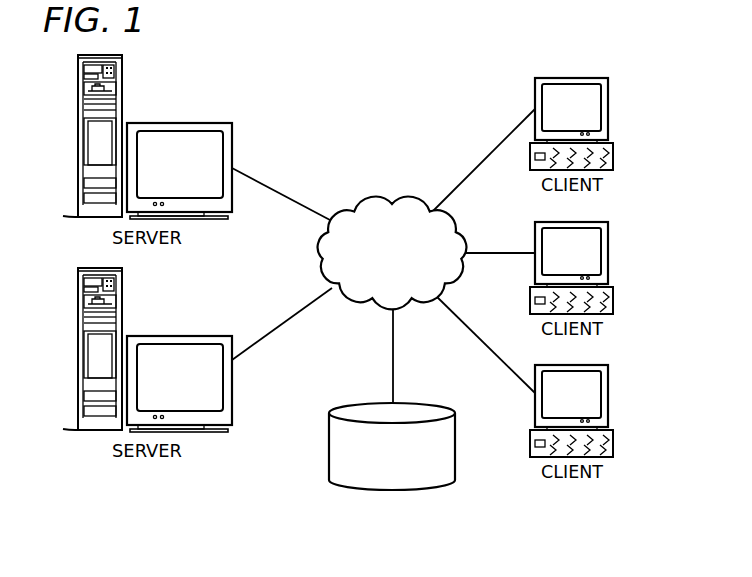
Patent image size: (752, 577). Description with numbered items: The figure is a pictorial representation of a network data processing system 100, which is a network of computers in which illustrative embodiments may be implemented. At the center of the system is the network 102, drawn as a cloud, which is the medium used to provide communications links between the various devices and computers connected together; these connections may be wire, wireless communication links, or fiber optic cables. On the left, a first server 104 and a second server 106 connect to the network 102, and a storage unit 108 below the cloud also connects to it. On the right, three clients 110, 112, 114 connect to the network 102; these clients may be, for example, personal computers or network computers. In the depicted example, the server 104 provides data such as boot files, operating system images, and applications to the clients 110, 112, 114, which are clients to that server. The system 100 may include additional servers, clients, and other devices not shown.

The network data processing system 100 is at (447, 86).
The network 102 is at (365, 202).
The server 104 is at (78, 139).
The server 106 is at (78, 352).
The storage unit 108 is at (372, 490).
The client 110 is at (608, 108).
The client 112 is at (608, 253).
The client 114 is at (608, 394).